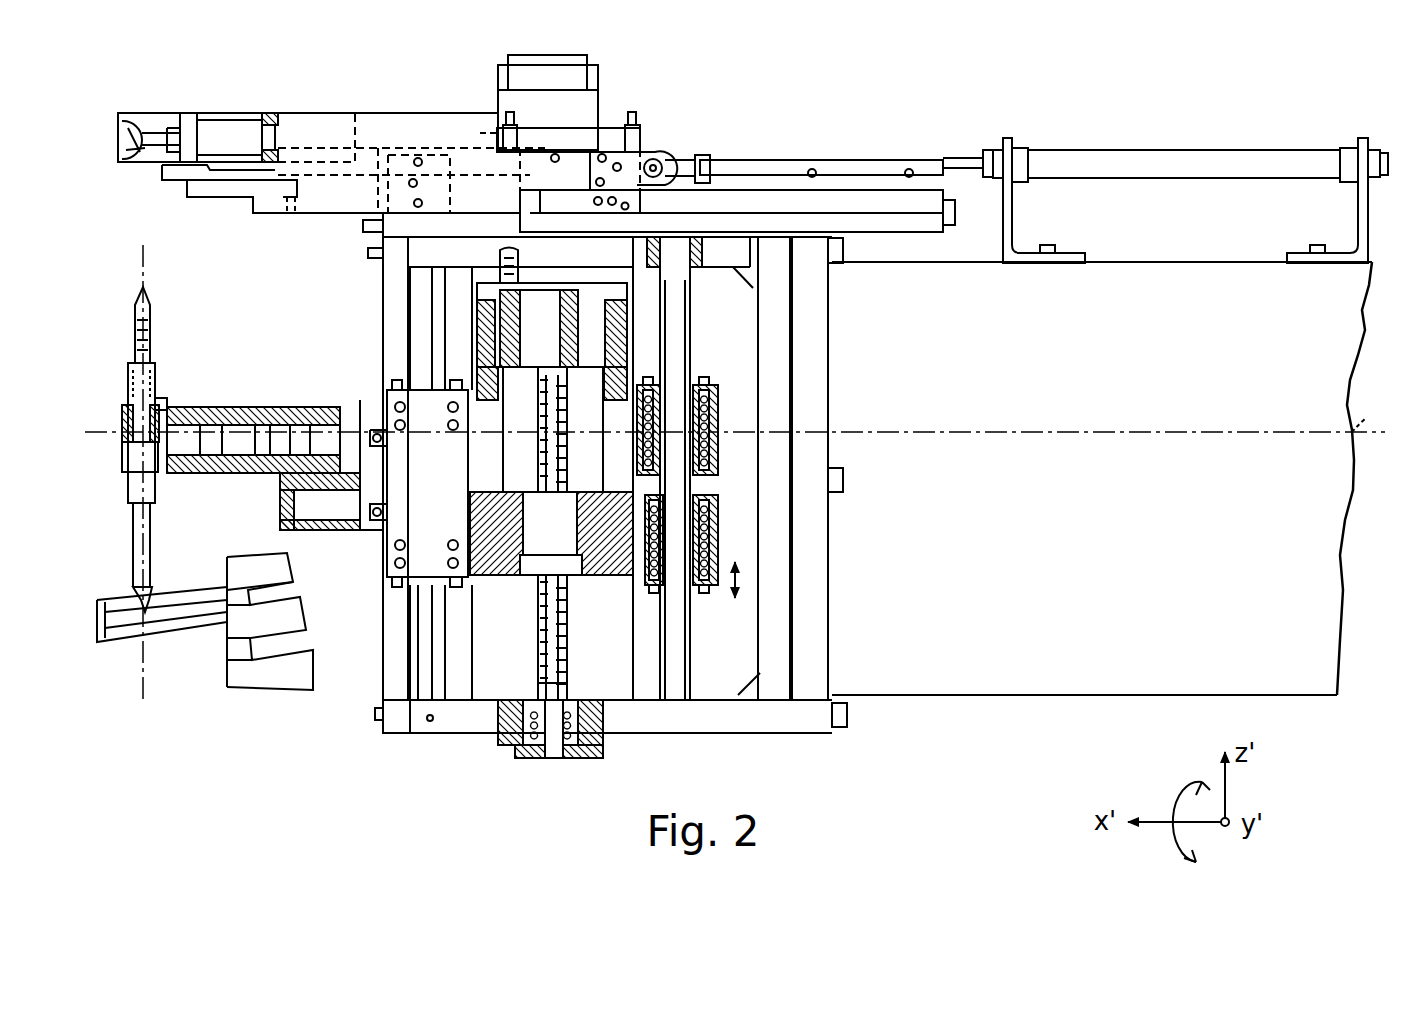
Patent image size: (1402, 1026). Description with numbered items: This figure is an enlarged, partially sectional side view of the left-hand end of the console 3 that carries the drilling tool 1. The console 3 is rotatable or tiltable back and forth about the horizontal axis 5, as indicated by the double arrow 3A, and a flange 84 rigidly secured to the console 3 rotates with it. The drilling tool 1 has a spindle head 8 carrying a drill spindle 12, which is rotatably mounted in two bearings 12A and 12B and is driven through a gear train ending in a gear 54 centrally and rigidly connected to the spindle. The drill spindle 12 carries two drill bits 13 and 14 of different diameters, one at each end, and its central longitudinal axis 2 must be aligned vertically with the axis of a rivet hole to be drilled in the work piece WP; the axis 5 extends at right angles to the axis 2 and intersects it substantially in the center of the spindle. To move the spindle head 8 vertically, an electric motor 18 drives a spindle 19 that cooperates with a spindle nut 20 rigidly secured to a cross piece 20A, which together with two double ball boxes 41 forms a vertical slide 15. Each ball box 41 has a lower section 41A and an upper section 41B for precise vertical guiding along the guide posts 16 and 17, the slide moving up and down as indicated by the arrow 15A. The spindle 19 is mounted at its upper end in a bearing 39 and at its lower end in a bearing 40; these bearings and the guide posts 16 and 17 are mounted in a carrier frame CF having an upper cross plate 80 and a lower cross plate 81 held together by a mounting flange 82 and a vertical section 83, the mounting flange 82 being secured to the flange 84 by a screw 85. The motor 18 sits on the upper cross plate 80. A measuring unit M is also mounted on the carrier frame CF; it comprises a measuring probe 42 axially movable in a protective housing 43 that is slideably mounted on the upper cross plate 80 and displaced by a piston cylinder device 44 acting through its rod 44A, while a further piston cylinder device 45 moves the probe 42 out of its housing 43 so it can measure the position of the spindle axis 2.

The drilling tool 1 is at (848, 157).
The central longitudinal axis 2 is at (140, 686).
The console 3 is at (1058, 410).
The double arrow 3A is at (1196, 858).
The horizontal axis 5 is at (1365, 404).
The spindle head 8 is at (222, 405).
The drill spindle 12 is at (130, 385).
The bearing 12A is at (128, 458).
The bearing 12B is at (158, 400).
The drill bit 13 is at (138, 312).
The drill bit 14 is at (137, 570).
The vertical slide 15 is at (370, 397).
The arrow 15A is at (742, 578).
The guide post 16 is at (420, 297).
The guide post 17 is at (673, 294).
The electric motor 18 is at (510, 98).
The spindle 19 is at (545, 625).
The spindle nut 20 is at (540, 512).
The cross piece 20A is at (612, 548).
The bearing 39 is at (530, 362).
The bearing 40 is at (503, 742).
The double ball box 41 is at (409, 504).
The lower section 41A is at (720, 528).
The upper section 41B is at (718, 405).
The measuring sensor or probe 42 is at (133, 162).
The protection pipe or housing 43 is at (168, 112).
The piston cylinder device 44 is at (1135, 160).
The cylinder rod guide 44A is at (912, 200).
The further piston cylinder device 45 is at (612, 130).
The gear 54 is at (122, 430).
The upper cross plate 80 is at (430, 253).
The lower cross plate 81 is at (713, 715).
The mounting flange 82 is at (783, 720).
The vertical section 83 is at (405, 722).
The flange 84 is at (812, 652).
The screw 85 is at (840, 256).
The carrier frame CF is at (604, 760).
The measuring unit M is at (272, 108).
The work piece WP is at (250, 665).